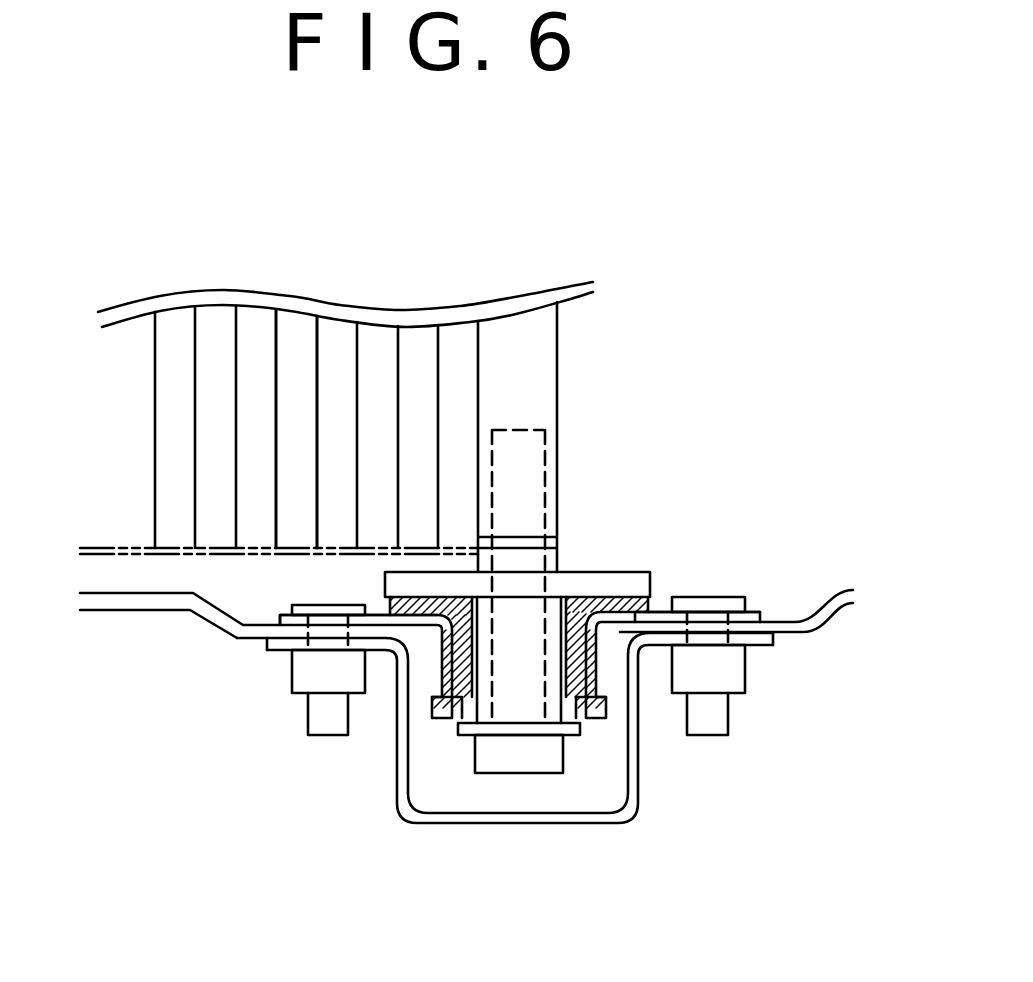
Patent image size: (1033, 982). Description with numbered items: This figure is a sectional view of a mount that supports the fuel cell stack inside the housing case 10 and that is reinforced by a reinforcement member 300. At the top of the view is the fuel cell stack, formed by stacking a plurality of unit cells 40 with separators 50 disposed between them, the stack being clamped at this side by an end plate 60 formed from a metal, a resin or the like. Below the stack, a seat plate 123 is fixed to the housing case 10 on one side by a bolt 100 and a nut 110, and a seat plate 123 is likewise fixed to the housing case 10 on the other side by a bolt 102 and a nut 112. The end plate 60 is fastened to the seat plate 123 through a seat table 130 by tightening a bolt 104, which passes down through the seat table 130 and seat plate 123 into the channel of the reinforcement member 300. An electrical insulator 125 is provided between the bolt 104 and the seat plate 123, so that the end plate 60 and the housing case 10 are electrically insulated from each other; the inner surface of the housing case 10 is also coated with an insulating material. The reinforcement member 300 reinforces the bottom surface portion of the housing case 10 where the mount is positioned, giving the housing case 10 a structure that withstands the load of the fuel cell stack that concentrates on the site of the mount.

The housing case 10 is at (113, 602).
The unit cell 40 is at (415, 375).
The separator 50 is at (310, 365).
The end plate 60 is at (512, 337).
The bolt 100 is at (730, 596).
The bolt 102 is at (325, 600).
The bolt 104 is at (548, 752).
The nut 110 is at (745, 665).
The nut 112 is at (293, 675).
The seat plate 123 is at (247, 630).
The electrical insulator 125 is at (432, 702).
The seat table 130 is at (588, 583).
The reinforcement member 300 is at (520, 823).